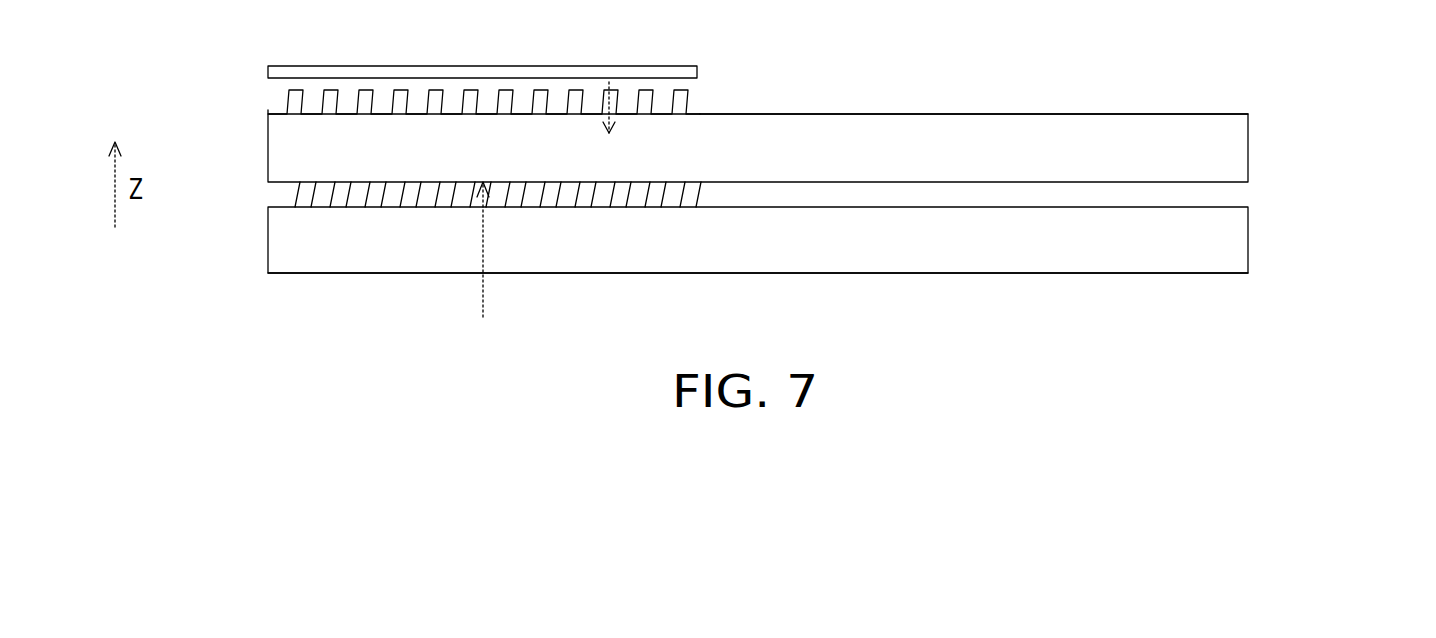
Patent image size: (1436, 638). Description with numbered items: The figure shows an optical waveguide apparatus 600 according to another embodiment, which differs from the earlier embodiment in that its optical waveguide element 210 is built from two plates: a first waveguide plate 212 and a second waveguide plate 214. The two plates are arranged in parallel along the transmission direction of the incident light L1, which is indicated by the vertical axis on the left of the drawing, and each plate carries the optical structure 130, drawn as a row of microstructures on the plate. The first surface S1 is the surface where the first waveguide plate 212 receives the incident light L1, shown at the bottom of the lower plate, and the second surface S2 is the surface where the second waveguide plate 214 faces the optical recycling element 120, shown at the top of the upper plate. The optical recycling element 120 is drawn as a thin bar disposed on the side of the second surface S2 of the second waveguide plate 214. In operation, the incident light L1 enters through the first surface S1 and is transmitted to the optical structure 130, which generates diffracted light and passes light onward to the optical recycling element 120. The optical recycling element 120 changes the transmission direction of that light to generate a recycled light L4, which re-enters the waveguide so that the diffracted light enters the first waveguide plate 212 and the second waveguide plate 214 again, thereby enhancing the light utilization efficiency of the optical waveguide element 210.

The optical recycling element 120 is at (700, 72).
The optical structure 130 is at (257, 86).
The optical waveguide element 210 is at (829, 193).
The first waveguide plate 212 is at (795, 240).
The second waveguide plate 214 is at (1230, 150).
The optical waveguide apparatus 600 is at (1393, 372).
The incident light L1 is at (481, 270).
The recycled light L4 is at (619, 102).
The first surface S1 is at (995, 274).
The second surface S2 is at (994, 113).